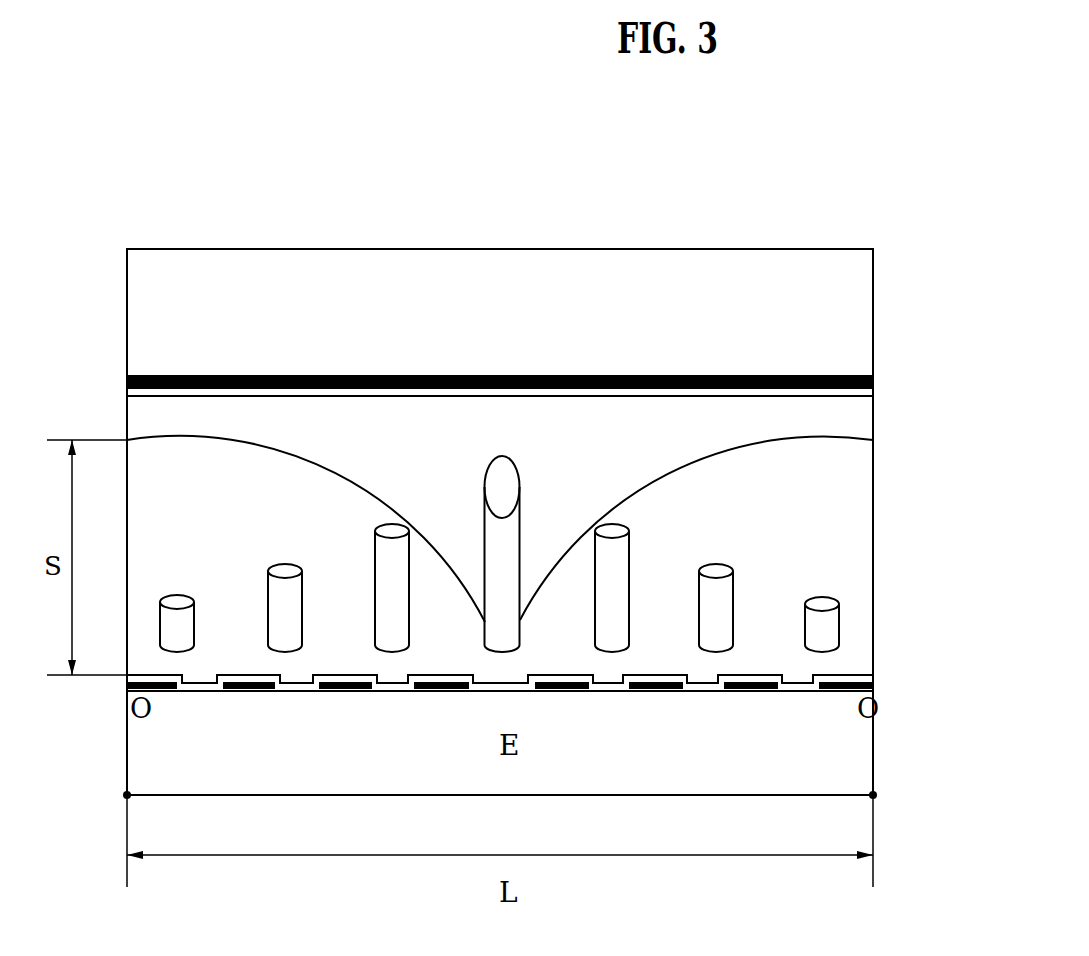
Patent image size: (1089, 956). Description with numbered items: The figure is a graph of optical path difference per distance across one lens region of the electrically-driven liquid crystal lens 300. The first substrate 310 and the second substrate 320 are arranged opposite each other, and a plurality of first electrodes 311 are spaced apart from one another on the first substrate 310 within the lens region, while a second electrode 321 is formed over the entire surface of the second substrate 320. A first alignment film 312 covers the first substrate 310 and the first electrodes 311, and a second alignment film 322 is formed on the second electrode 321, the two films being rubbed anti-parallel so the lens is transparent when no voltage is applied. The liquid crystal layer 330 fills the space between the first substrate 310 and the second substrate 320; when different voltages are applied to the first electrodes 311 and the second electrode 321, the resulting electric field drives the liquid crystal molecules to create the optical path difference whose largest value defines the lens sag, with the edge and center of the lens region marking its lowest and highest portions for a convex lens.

The electrically-driven liquid crystal lens 300 is at (1010, 313).
The first substrate 310 is at (865, 748).
The first electrodes 311 is at (868, 686).
The first alignment film 312 is at (868, 678).
The second substrate 320 is at (866, 313).
The second electrode 321 is at (866, 384).
The second alignment film 322 is at (865, 398).
The liquid crystal layer 330 is at (866, 555).